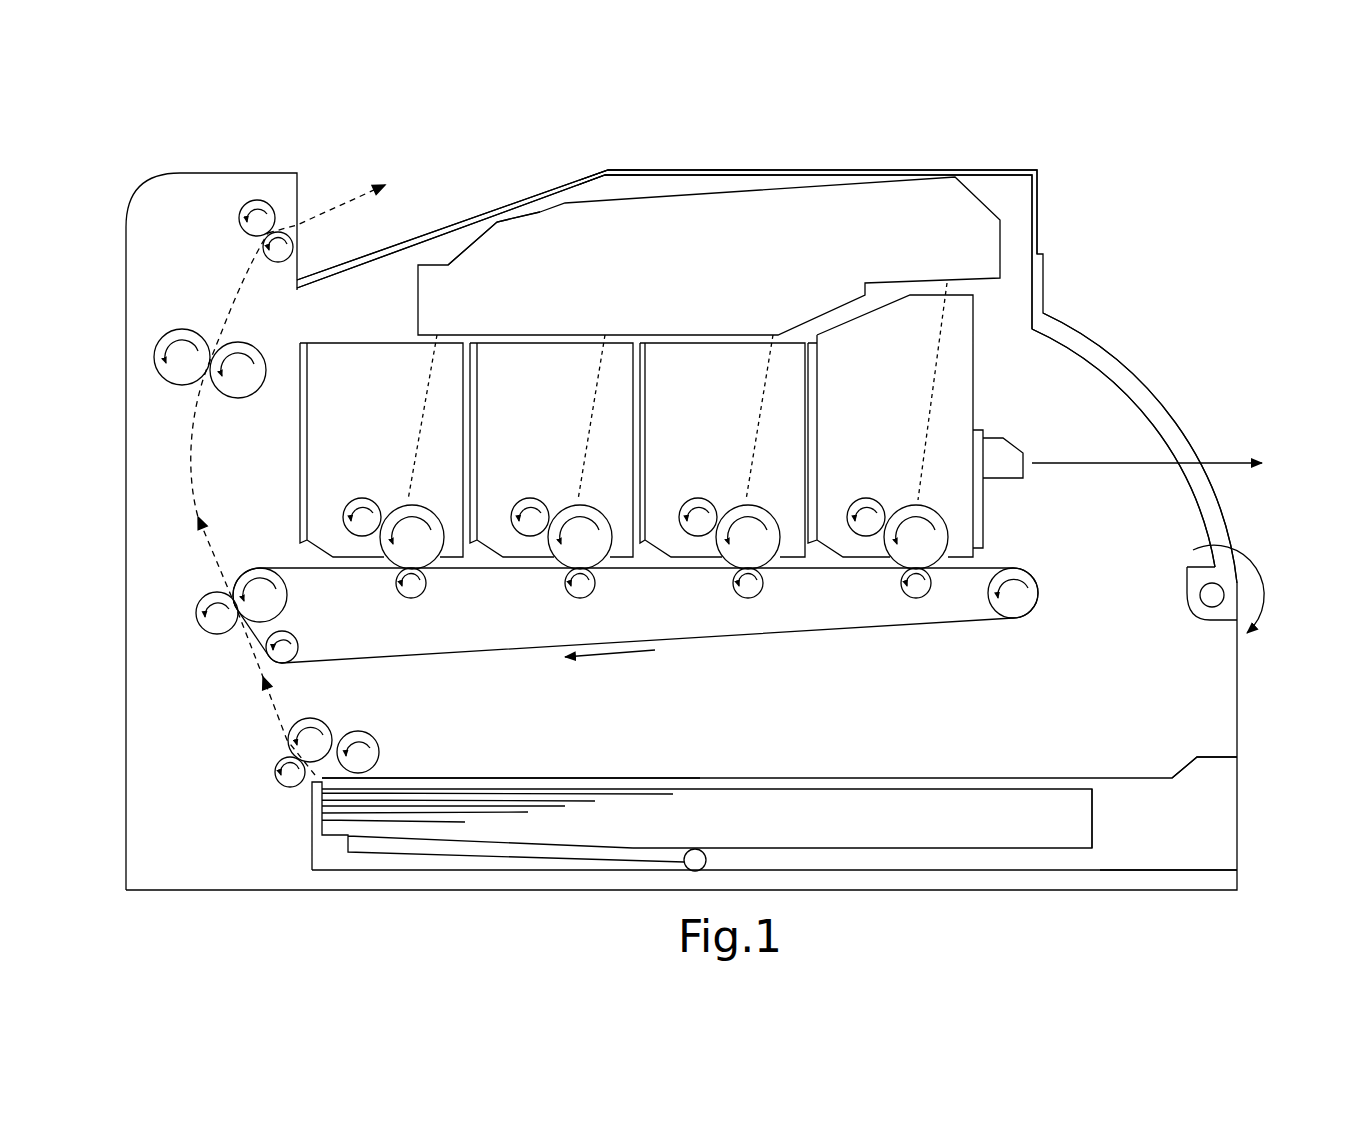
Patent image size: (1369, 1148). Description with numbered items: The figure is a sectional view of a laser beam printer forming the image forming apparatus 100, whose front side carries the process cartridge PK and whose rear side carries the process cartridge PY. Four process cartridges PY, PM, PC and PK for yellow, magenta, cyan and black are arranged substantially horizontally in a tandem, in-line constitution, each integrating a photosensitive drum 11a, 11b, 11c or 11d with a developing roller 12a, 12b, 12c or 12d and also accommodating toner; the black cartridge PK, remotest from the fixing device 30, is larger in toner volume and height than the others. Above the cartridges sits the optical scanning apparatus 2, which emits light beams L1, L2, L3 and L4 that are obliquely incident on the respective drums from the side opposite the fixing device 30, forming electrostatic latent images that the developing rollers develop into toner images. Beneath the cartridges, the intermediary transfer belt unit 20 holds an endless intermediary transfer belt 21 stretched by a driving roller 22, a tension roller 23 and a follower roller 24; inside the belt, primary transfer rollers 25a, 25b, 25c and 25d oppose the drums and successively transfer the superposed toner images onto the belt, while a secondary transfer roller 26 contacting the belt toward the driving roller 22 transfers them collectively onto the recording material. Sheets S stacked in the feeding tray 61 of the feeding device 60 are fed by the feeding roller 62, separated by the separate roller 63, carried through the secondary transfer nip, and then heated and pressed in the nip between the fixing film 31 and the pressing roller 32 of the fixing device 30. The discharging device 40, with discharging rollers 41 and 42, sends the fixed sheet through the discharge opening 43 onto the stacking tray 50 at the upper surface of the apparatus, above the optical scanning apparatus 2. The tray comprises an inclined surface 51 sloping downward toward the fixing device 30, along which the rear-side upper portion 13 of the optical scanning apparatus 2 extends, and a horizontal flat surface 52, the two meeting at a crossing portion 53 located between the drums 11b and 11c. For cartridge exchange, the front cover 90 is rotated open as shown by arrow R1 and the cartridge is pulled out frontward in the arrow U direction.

The image forming apparatus 100 is at (968, 168).
The optical scanning apparatus 2 is at (673, 215).
The rear-side upper portion 13 is at (540, 197).
The stacking tray 50 is at (850, 168).
The inclined surface 51 is at (467, 227).
The flat surface 52 is at (725, 168).
The crossing portion 53 is at (603, 168).
The front cover 90 is at (1123, 345).
The arrow R1 is at (1250, 589).
The arrow U direction U is at (1162, 463).
The discharging device 40 is at (228, 243).
The discharging roller 41 is at (243, 213).
The discharging roller 42 is at (270, 258).
The discharge opening 43 is at (297, 225).
The fixing device 30 is at (158, 400).
The fixing film 31 is at (243, 397).
The pressing roller 32 is at (160, 363).
The process cartridge PY is at (440, 333).
The process cartridge PM is at (568, 333).
The process cartridge PC is at (705, 333).
The process cartridge PK is at (882, 300).
The photosensitive drum 11a is at (412, 537).
The photosensitive drum 11b is at (580, 537).
The photosensitive drum 11c is at (748, 537).
The photosensitive drum 11d is at (916, 537).
The developing roller 12a is at (362, 499).
The developing roller 12b is at (530, 499).
The developing roller 12c is at (698, 499).
The developing roller 12d is at (866, 499).
The light beam L1 is at (425, 423).
The light beam L2 is at (592, 425).
The light beam L3 is at (762, 425).
The light beam L4 is at (930, 405).
The intermediary transfer belt unit 20 is at (662, 603).
The intermediary transfer belt 21 is at (703, 652).
The driving roller 22 is at (258, 575).
The tension roller 23 is at (295, 640).
The follower roller 24 is at (1035, 612).
The primary transfer roller 25a is at (405, 597).
The primary transfer roller 25b is at (574, 597).
The primary transfer roller 25c is at (742, 597).
The primary transfer roller 25d is at (910, 597).
The secondary transfer roller 26 is at (205, 625).
The feeding device 60 is at (516, 776).
The feeding tray 61 is at (1215, 822).
The feeding roller 62 is at (378, 752).
The separate roller 63 is at (322, 722).
The sheet S is at (622, 827).